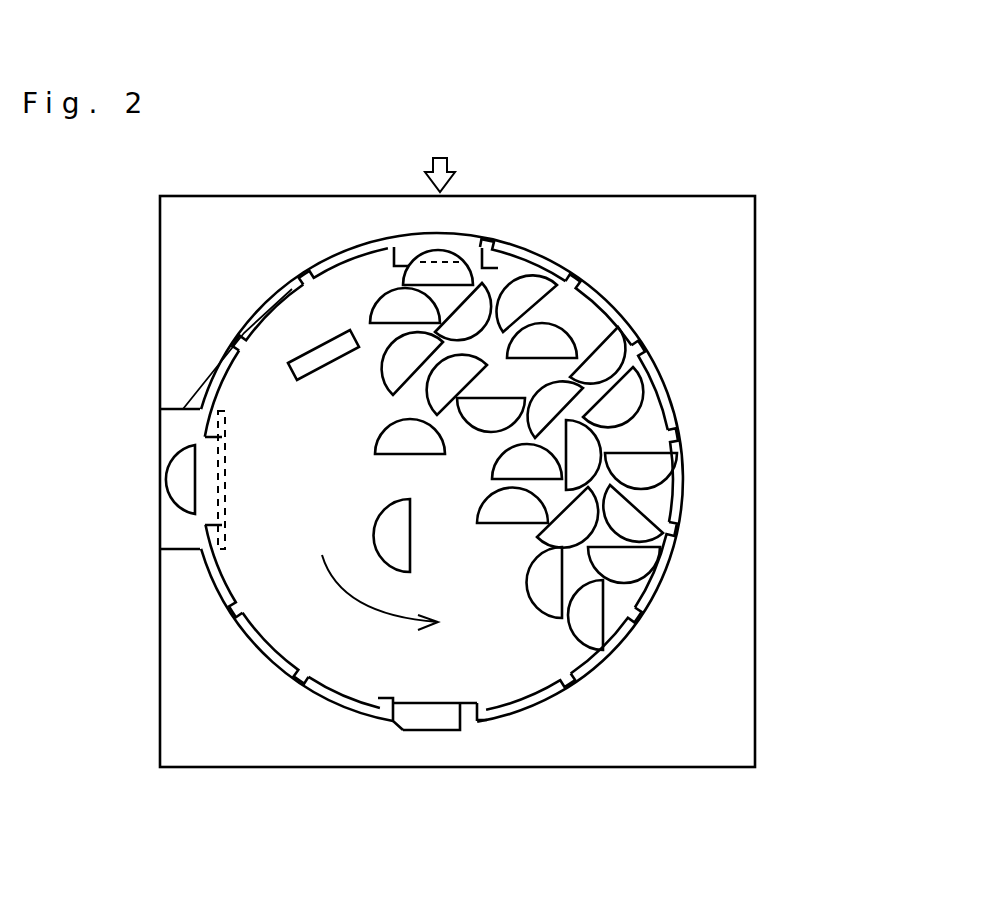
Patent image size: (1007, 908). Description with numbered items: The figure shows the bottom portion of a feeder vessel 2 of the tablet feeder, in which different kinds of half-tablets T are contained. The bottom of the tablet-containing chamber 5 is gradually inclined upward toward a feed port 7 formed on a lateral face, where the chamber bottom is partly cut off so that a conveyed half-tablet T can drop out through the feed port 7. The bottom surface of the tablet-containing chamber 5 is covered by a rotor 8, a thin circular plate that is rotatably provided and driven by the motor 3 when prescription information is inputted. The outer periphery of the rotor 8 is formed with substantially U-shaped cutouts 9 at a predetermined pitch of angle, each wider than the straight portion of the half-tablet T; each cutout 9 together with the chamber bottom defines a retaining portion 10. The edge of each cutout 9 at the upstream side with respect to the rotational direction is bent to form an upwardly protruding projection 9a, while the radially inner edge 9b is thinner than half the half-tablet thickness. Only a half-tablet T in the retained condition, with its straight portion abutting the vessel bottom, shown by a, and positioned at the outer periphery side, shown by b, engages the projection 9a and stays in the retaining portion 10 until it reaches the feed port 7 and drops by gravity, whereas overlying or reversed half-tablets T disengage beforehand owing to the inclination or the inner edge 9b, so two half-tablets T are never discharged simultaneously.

The feeder vessel 2 is at (757, 392).
The motor 3 is at (440, 161).
The tablet-containing chamber 5 is at (373, 548).
The feed port 7 is at (177, 550).
The rotor 8 is at (330, 494).
The cutout 9 is at (415, 779).
The projection 9a is at (408, 728).
The inner edge 9b is at (458, 716).
The retaining portion 10 is at (270, 642).
The retained condition (straight portion abutting bottom) a is at (261, 291).
The retained condition (straight portion at outer periphery) b is at (145, 476).
The half-tablet T is at (207, 489).